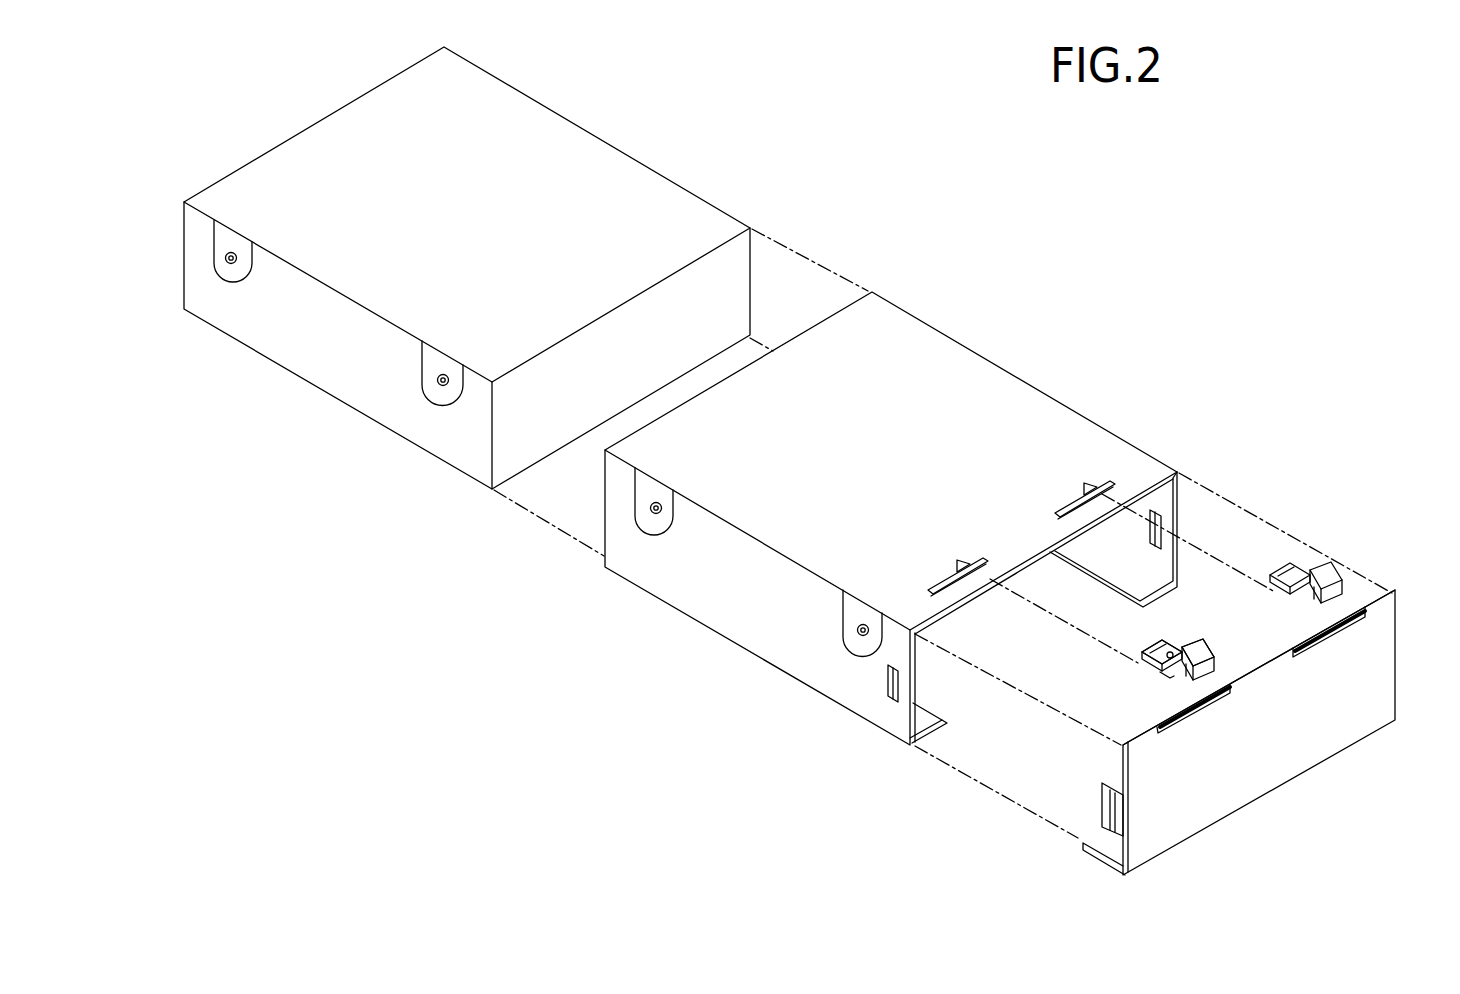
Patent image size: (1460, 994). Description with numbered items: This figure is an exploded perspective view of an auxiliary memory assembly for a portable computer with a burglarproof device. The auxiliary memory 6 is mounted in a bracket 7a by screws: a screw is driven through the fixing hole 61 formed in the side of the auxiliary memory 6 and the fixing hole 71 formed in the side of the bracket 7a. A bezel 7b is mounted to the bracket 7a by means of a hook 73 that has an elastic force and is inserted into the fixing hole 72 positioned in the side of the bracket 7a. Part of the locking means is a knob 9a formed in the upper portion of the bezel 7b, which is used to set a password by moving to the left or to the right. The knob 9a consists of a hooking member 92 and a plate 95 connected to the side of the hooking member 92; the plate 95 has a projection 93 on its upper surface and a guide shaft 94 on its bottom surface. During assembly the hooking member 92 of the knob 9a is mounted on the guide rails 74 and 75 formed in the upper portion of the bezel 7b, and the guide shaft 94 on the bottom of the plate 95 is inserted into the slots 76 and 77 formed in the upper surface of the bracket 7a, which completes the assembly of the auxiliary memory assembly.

The auxiliary memory 6 is at (286, 160).
The fixing hole 61 is at (225, 258).
The bracket 7a is at (957, 350).
The bezel 7b is at (1265, 778).
The fixing hole 71 is at (652, 515).
The fixing hole 72 is at (887, 690).
The hook 73 is at (1107, 810).
The guide rail 74 is at (1170, 724).
The guide rail 75 is at (1363, 612).
The slot 76 is at (1105, 482).
The slot 77 is at (940, 578).
The knob 9a is at (1187, 642).
The hooking member 92 is at (1203, 653).
The projection 93 is at (1170, 652).
The guide shaft 94 is at (1166, 674).
The plate 95 is at (1147, 650).